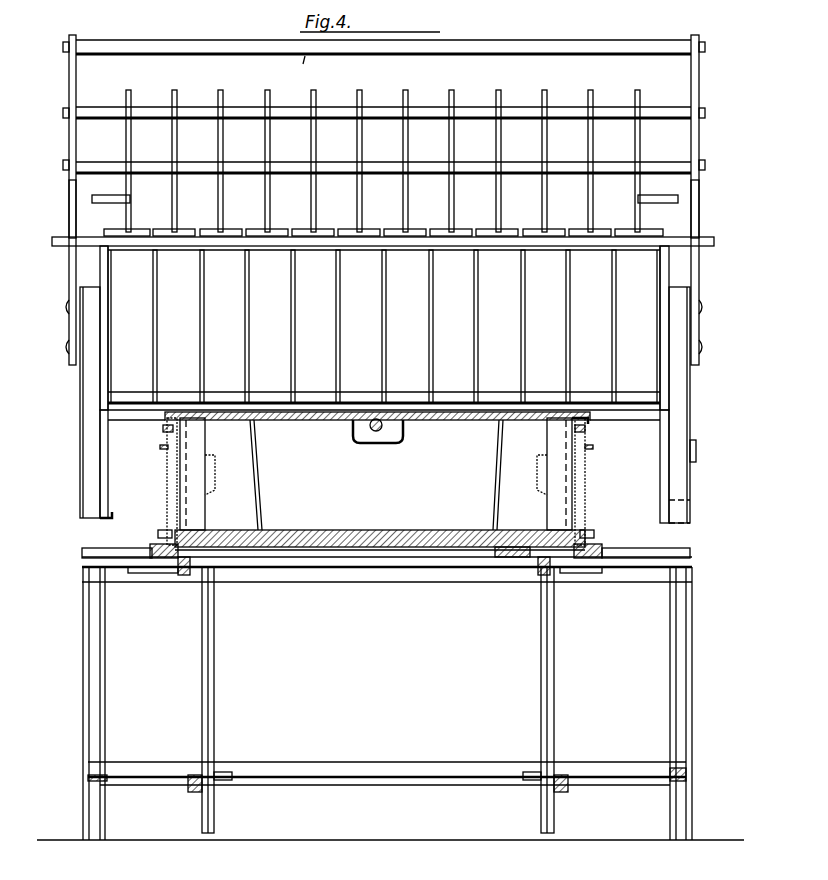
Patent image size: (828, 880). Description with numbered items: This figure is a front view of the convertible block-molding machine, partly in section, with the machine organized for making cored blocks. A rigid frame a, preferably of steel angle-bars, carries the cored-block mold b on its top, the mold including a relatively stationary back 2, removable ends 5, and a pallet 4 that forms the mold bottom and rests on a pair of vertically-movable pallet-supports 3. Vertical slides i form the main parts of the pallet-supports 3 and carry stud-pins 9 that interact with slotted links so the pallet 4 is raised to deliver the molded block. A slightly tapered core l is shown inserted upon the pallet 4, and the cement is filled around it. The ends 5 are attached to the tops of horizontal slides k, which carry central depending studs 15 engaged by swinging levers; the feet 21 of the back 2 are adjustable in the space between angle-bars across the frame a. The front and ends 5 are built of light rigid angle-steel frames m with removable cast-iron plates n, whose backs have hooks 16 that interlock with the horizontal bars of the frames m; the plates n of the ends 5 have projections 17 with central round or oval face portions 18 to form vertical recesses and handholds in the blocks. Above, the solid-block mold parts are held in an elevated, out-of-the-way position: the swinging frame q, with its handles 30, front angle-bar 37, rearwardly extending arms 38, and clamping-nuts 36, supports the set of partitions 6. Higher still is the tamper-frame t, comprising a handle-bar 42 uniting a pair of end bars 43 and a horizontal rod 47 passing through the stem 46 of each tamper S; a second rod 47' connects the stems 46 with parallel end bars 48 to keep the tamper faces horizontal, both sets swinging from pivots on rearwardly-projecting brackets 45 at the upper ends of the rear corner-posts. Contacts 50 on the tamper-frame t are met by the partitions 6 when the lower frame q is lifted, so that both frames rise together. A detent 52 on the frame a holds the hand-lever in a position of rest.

The handle-bar 42 is at (126, 44).
The end bars 43 is at (69, 88).
The horizontal rod 47 is at (383, 103).
The rod 47' is at (383, 156).
The tamper-frame t is at (309, 70).
The stems 46 is at (311, 122).
The tampers S is at (306, 229).
The end bars 48 is at (69, 207).
The contacts 50 is at (100, 203).
The handles 30 is at (52, 241).
The swinging frame q is at (105, 272).
The angle-bar 37 is at (228, 250).
The brackets 45 is at (80, 320).
The partitions 6 is at (247, 322).
The back 2 is at (216, 410).
The core l is at (377, 471).
The pallet 4 is at (378, 540).
The ends 5 is at (167, 497).
The projections 17 is at (205, 446).
The plates n is at (374, 475).
The face portions 18 is at (216, 497).
The mold b is at (163, 427).
The hooks 16 is at (160, 470).
The frames m is at (165, 435).
The arms 38 is at (105, 470).
The clamping-nuts 36 is at (585, 420).
The detent 52 is at (696, 454).
The horizontal slides k is at (112, 553).
The depending studs 15 is at (140, 573).
The feet 21 is at (182, 575).
The frame a is at (83, 616).
The pallet-supports 3 is at (214, 631).
The vertical slides i is at (214, 698).
The stud-pins 9 is at (226, 772).